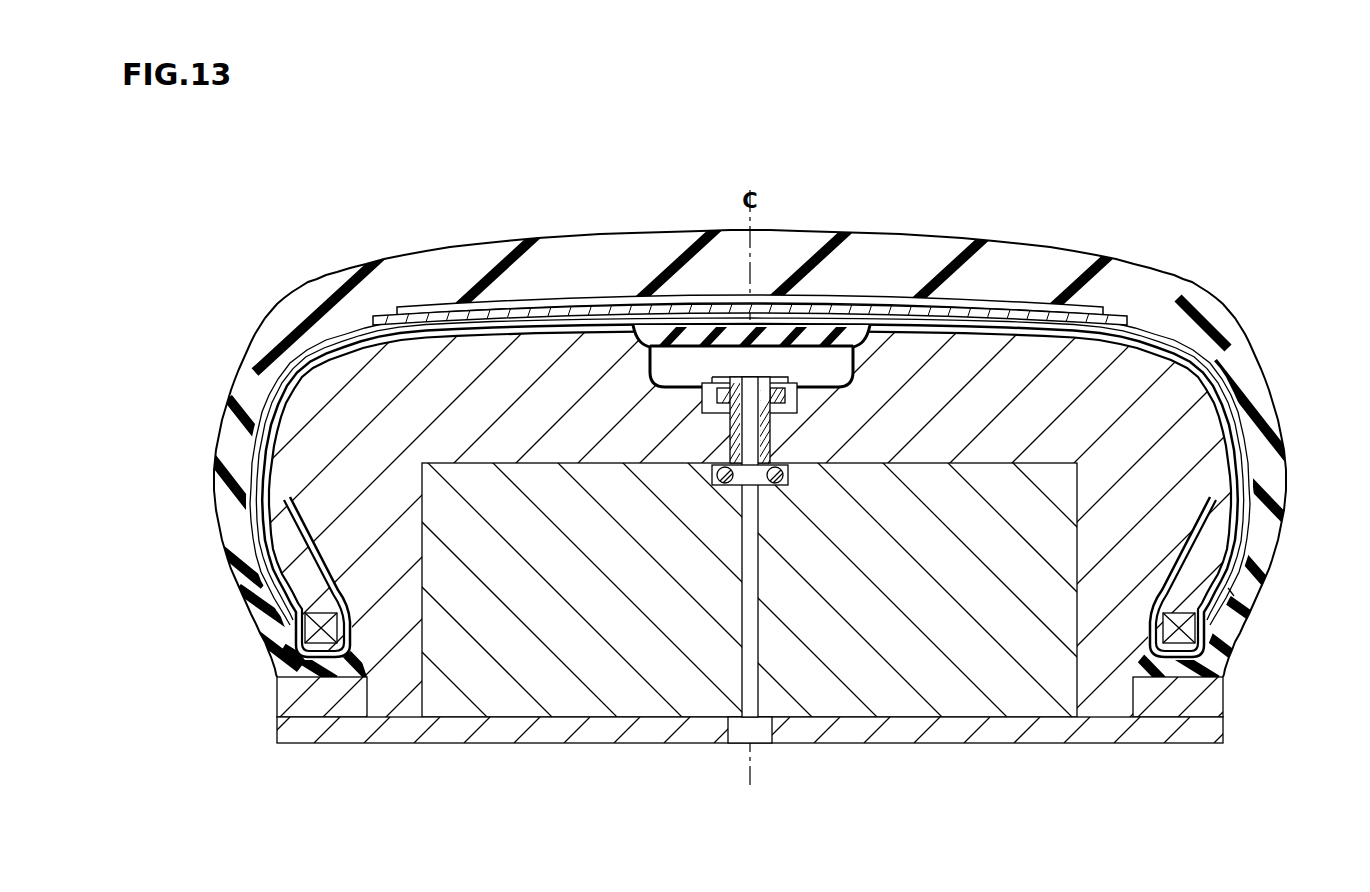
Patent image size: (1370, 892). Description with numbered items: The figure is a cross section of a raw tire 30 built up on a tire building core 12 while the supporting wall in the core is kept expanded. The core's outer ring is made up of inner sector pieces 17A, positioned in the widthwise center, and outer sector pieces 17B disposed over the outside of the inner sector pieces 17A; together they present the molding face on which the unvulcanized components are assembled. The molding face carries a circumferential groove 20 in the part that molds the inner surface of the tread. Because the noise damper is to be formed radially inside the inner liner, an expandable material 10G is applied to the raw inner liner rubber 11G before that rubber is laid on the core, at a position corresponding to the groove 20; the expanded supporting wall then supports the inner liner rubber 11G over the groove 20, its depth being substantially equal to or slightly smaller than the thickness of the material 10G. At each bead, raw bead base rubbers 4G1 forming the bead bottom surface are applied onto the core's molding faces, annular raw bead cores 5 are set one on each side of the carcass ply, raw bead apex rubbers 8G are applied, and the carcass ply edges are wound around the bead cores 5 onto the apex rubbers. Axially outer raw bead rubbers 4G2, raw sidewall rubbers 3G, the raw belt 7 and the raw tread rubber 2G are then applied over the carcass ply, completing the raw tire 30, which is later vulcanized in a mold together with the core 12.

The raw tire 30 is at (1157, 224).
The raw tread rubber 2G is at (1020, 262).
The raw sidewall rubber 3G is at (240, 450).
The raw bead apex rubber 8G is at (275, 545).
The raw inner liner rubber 11G is at (310, 372).
The outer sector piece 17B is at (303, 425).
The inner sector piece 17A is at (620, 670).
The tire building core 12 is at (901, 748).
The raw belt 7 is at (432, 302).
The expandable material 10G is at (835, 335).
The circumferential groove 20 is at (643, 332).
The raw bead core 5 is at (302, 628).
The raw bead base rubber 4G1 is at (1227, 593).
The axially outer raw bead rubber 4G2 is at (273, 593).